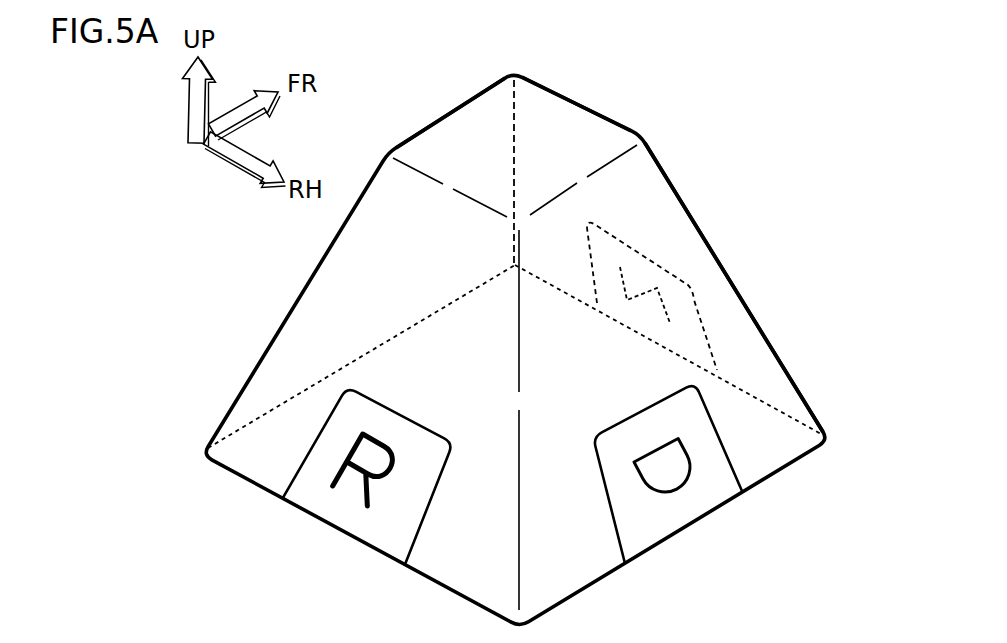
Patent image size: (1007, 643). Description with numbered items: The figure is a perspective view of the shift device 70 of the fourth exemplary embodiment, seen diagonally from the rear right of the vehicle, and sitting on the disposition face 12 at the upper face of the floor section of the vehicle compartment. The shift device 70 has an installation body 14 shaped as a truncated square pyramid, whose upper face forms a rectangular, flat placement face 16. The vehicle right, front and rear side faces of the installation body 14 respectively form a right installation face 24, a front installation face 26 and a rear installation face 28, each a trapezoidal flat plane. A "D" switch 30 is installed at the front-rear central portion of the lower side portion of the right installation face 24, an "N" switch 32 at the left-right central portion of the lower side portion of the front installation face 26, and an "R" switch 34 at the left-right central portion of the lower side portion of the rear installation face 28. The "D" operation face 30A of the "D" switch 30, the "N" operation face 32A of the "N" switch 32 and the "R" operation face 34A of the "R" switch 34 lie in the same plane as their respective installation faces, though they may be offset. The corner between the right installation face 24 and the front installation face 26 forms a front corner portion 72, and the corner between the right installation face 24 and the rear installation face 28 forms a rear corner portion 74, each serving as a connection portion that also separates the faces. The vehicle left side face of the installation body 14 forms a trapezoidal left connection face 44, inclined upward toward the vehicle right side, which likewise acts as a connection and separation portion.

The disposition face 12 is at (220, 558).
The installation body 14 is at (456, 102).
The placement face 16 is at (572, 120).
The right installation face 24 is at (747, 338).
The front installation face 26 is at (668, 220).
The rear installation face 28 is at (282, 318).
The "D" switch 30 is at (647, 403).
The "D" operation face 30A is at (682, 513).
The "N" switch 32 is at (630, 243).
The "N" operation face 32A is at (680, 303).
The "R" switch 34 is at (400, 407).
The "R" operation face 34A is at (350, 520).
The left connection face 44 is at (346, 270).
The shift device 70 is at (186, 245).
The front corner portion 72 is at (710, 237).
The rear corner portion 74 is at (520, 360).